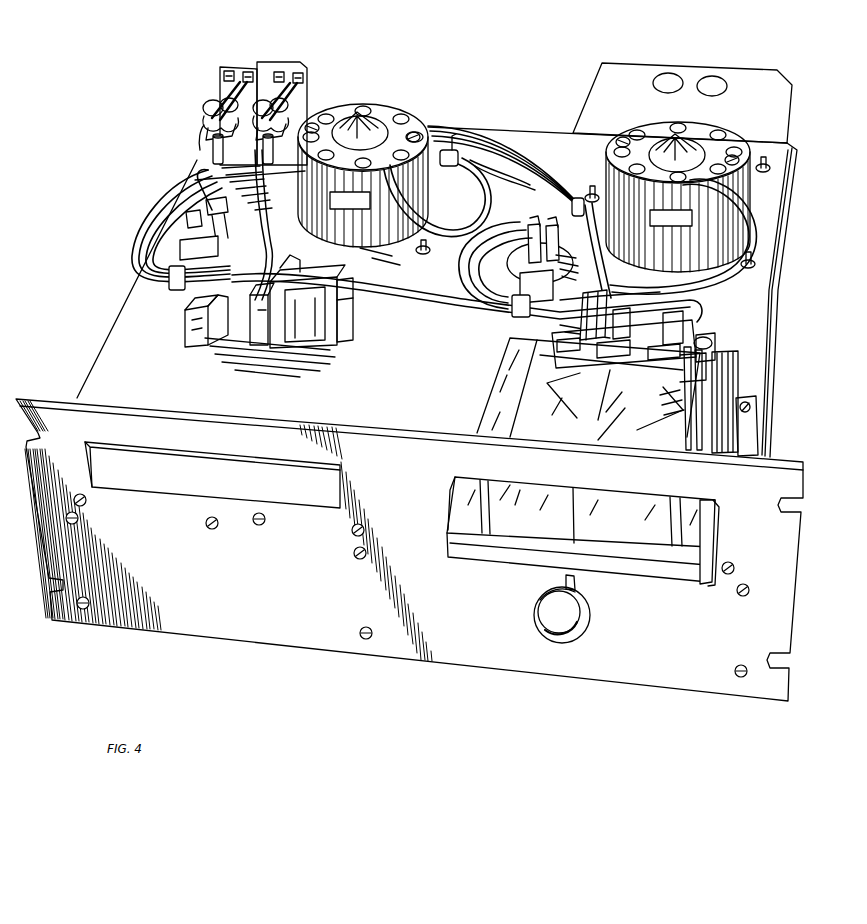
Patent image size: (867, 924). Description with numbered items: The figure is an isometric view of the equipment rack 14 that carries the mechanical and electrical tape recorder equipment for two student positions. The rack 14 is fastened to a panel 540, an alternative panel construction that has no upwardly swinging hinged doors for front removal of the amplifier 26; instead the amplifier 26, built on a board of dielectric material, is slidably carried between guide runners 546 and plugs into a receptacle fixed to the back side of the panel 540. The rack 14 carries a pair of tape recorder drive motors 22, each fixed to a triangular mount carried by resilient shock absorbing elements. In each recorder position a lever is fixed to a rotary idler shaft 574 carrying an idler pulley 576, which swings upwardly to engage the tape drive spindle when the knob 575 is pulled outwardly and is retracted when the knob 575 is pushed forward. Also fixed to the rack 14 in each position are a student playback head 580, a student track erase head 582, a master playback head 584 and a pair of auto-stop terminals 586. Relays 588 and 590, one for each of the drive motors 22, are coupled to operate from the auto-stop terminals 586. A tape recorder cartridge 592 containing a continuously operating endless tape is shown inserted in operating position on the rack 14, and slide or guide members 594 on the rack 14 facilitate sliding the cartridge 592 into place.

The equipment rack 14 is at (117, 327).
The tape recorder drive motor 22 is at (573, 127).
The amplifier 26 is at (636, 107).
The panel 540 is at (467, 655).
The guide runners 546 is at (613, 62).
The rotary idler shaft 574 is at (745, 378).
The knob 575 is at (593, 625).
The idler pulley 576 is at (716, 350).
The student playback head 580 is at (335, 305).
The student track erase head 582 is at (190, 345).
The master playback head 584 is at (233, 347).
The auto-stop terminals 586 is at (247, 347).
The relay 588 is at (237, 68).
The relay 590 is at (300, 60).
The tape recorder cartridge 592 is at (658, 573).
The slide or guide members 594 is at (740, 432).